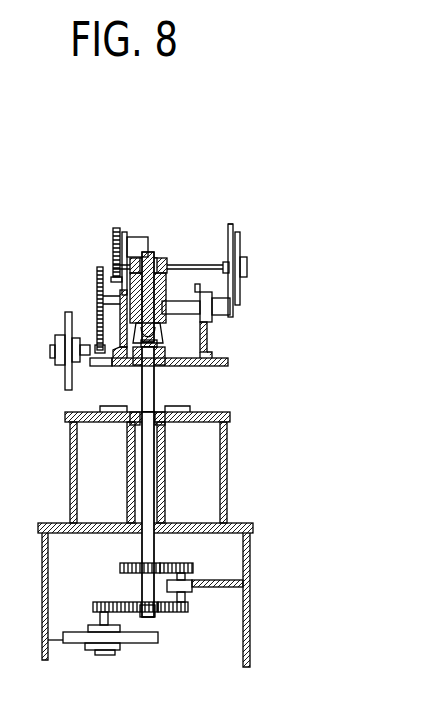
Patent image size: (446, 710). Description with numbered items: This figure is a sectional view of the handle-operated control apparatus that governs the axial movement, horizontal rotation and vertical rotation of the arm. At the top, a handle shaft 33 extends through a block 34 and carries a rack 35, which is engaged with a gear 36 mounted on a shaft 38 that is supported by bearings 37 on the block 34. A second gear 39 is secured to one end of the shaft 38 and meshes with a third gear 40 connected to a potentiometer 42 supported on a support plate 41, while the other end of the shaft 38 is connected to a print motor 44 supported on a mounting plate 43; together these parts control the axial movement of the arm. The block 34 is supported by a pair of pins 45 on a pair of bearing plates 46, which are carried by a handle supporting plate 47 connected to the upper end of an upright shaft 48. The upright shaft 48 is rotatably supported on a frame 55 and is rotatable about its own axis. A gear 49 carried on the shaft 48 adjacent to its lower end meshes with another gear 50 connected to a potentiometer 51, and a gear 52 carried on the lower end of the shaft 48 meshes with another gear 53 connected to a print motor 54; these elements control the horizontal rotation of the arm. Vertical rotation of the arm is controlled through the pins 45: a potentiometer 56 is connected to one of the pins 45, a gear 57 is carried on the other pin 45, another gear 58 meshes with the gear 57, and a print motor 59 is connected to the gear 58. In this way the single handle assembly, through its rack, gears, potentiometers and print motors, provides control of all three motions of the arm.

The handle shaft 33 is at (160, 345).
The block 34 is at (133, 343).
The rack 35 is at (188, 292).
The gear 36 is at (150, 258).
The bearings 37 is at (162, 275).
The shaft 38 is at (213, 263).
The second gear 39 is at (110, 242).
The third gear 40 is at (112, 237).
The support plate 41 is at (113, 260).
The potentiometer 42 is at (138, 237).
The mounting plate 43 is at (232, 225).
The print motor 44 is at (235, 232).
The pins 45 is at (98, 300).
The bearing plates 46 is at (125, 327).
The handle supporting plate 47 is at (223, 362).
The upright shaft 48 is at (175, 392).
The gear 49 is at (123, 565).
The gear 50 is at (187, 565).
The potentiometer 51 is at (183, 588).
The gear 52 is at (177, 613).
The gear 53 is at (97, 603).
The print motor 54 is at (67, 635).
The frame 55 is at (127, 485).
The potentiometer 56 is at (252, 307).
The gear 57 is at (110, 258).
The gear 58 is at (103, 350).
The print motor 59 is at (62, 370).